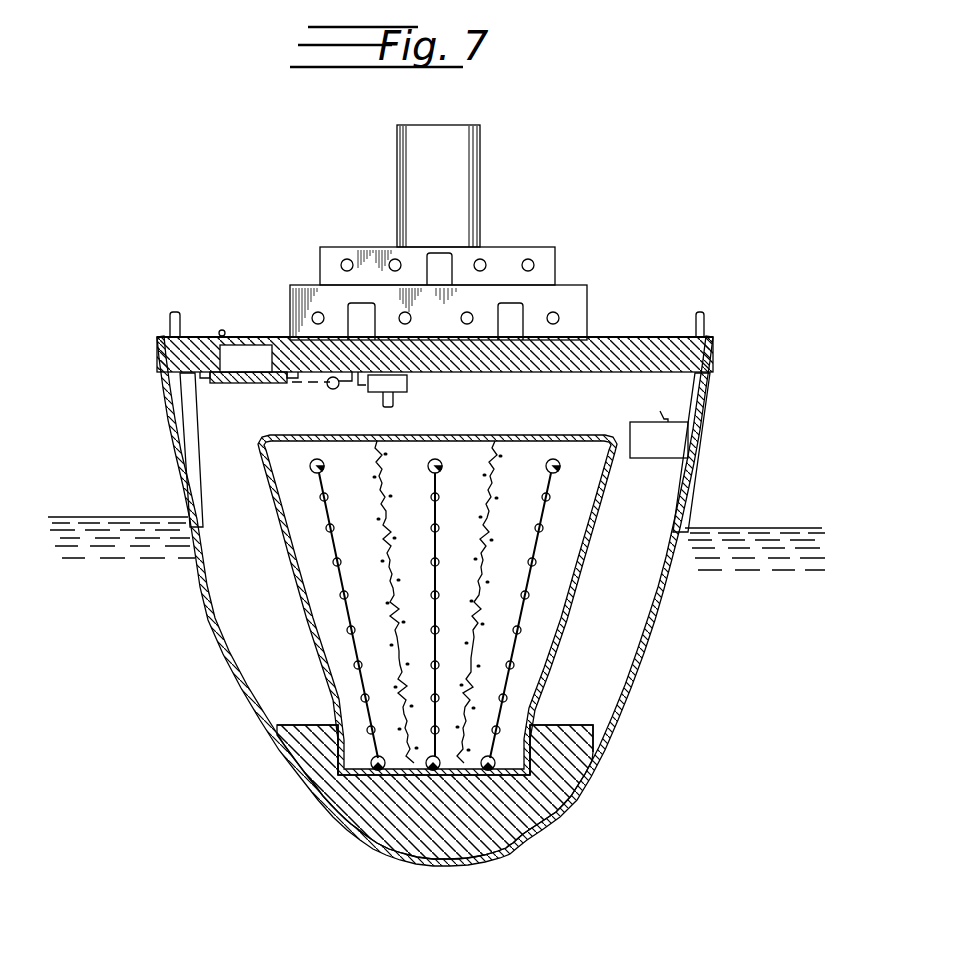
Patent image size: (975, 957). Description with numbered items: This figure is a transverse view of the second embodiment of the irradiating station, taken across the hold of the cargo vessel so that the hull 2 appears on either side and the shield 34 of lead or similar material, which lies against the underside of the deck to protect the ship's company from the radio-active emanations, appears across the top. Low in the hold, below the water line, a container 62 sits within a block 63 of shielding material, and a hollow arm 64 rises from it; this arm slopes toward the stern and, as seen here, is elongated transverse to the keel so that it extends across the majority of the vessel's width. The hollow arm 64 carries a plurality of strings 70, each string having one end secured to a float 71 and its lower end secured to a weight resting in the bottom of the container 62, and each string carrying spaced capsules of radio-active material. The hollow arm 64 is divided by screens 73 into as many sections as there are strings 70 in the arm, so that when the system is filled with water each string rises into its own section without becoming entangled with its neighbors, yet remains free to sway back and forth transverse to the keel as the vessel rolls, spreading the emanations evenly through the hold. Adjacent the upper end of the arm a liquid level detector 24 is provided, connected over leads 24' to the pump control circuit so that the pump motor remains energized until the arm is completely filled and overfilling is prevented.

The hull 2 is at (707, 458).
The liquid level detector 24 is at (659, 454).
The leads 24' is at (652, 409).
The shield 34 is at (520, 373).
The container 62 is at (332, 720).
The block 63 is at (585, 726).
The hollow arm 64 is at (577, 591).
The strings 70 is at (336, 546).
The float 71 is at (310, 467).
The screens 73 is at (391, 578).